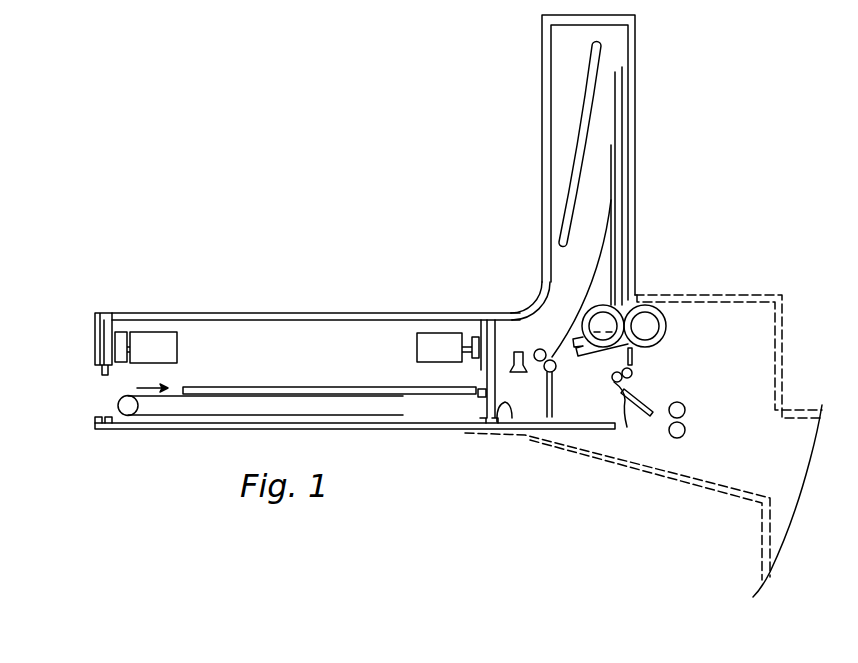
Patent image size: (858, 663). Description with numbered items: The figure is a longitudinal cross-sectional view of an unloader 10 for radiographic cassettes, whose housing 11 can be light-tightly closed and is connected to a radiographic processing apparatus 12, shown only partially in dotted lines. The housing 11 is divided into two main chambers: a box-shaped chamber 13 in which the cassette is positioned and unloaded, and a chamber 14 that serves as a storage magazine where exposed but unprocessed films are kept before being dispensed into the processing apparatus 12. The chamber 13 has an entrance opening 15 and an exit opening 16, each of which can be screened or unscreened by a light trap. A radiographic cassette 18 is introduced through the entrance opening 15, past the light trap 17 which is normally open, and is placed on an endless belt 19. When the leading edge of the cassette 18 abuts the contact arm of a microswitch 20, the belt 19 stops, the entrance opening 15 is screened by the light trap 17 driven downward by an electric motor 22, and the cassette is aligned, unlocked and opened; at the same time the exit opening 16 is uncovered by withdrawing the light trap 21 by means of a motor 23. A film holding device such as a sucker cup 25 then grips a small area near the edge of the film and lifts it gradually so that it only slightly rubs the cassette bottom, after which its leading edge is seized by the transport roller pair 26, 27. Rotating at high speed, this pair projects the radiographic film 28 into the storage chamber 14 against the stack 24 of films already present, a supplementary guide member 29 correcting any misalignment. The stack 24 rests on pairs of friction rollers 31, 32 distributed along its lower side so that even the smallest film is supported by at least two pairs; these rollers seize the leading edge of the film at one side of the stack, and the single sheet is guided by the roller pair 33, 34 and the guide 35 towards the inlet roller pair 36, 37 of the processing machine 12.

The unloader 10 is at (264, 301).
The housing 11 is at (140, 316).
The radiographic processing apparatus 12 is at (757, 478).
The chamber 13 is at (320, 338).
The chamber 14 is at (560, 52).
The entrance opening 15 is at (108, 388).
The exit opening 16 is at (486, 403).
The light trap 17 is at (98, 369).
The radiographic cassette 18 is at (243, 393).
The endless belt 19 is at (165, 415).
The microswitch 20 is at (477, 387).
The light trap 21 is at (505, 422).
The electric motor 22 is at (165, 352).
The motor 23 is at (418, 342).
The stack of radiographic films 24 is at (618, 150).
The sucker cup 25 is at (522, 353).
The transport roller 26 is at (552, 356).
The transport roller 27 is at (556, 374).
The radiographic film 28 is at (583, 298).
The supplementary guide member 29 is at (580, 125).
The friction roller 31 is at (598, 333).
The friction roller 32 is at (645, 326).
The roller 33 is at (626, 420).
The roller 34 is at (632, 373).
The guide 35 is at (652, 418).
The inlet roller 36 is at (680, 410).
The inlet roller 37 is at (680, 430).